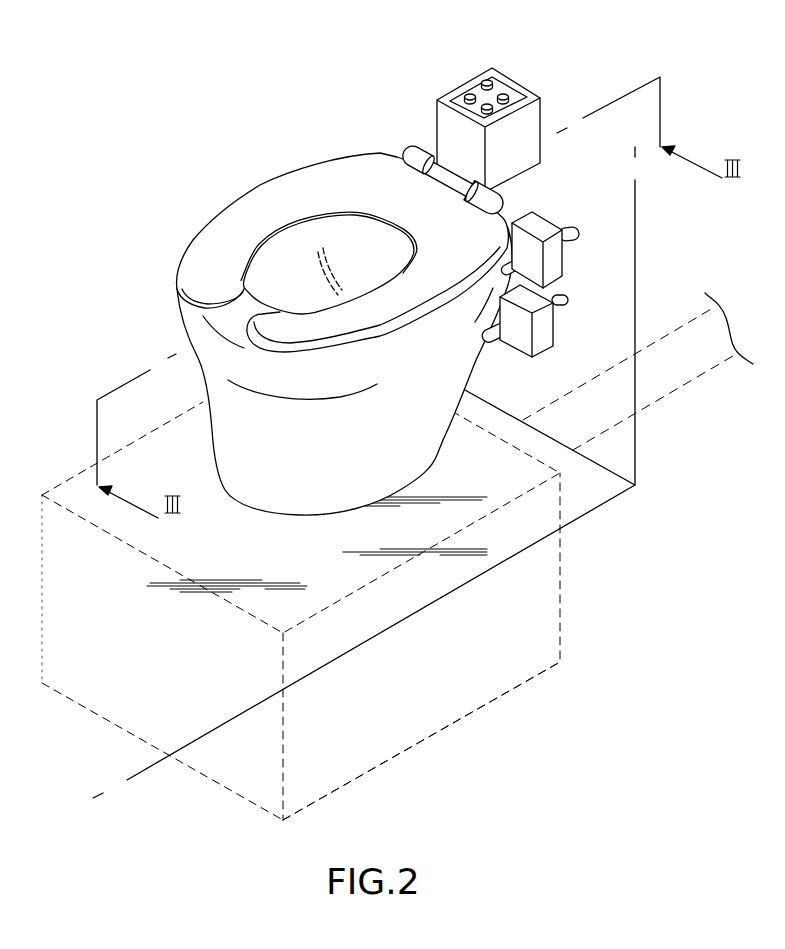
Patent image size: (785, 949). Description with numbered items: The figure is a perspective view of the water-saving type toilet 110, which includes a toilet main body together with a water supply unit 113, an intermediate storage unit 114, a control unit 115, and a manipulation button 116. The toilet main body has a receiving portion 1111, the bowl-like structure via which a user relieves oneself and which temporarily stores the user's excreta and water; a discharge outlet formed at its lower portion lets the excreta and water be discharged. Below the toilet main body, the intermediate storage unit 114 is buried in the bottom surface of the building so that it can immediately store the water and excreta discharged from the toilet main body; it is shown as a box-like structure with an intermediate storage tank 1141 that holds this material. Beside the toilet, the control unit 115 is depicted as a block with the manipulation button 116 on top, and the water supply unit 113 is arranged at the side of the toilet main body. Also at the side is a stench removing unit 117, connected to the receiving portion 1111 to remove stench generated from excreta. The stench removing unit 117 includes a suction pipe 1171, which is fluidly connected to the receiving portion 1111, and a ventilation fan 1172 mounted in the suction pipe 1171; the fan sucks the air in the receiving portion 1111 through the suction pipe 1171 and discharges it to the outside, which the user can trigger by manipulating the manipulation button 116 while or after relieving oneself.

The water-saving type toilet 110 is at (180, 82).
The receiving portion 1111 is at (287, 252).
The water supply unit 113 is at (545, 331).
The intermediate storage unit 114 is at (582, 630).
The intermediate storage tank 1141 is at (507, 668).
The control unit 115 is at (435, 112).
The manipulation button 116 is at (503, 92).
The stench removing unit 117 is at (628, 244).
The suction pipe 1171 is at (547, 251).
The ventilation fan 1172 is at (544, 228).